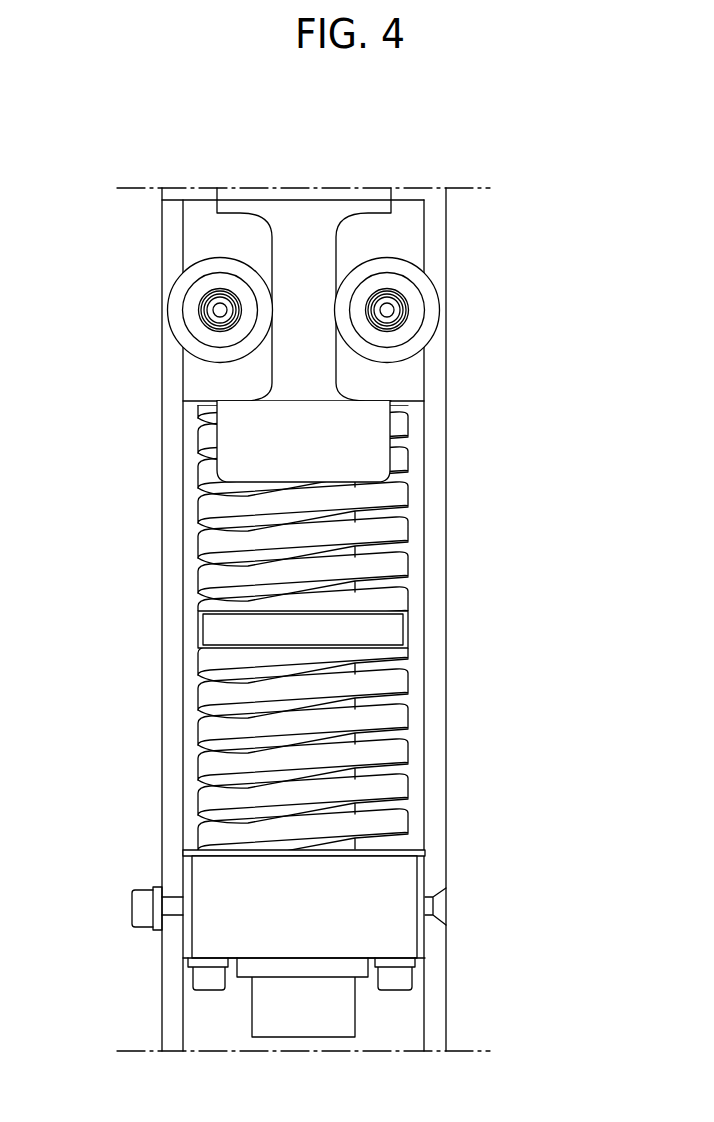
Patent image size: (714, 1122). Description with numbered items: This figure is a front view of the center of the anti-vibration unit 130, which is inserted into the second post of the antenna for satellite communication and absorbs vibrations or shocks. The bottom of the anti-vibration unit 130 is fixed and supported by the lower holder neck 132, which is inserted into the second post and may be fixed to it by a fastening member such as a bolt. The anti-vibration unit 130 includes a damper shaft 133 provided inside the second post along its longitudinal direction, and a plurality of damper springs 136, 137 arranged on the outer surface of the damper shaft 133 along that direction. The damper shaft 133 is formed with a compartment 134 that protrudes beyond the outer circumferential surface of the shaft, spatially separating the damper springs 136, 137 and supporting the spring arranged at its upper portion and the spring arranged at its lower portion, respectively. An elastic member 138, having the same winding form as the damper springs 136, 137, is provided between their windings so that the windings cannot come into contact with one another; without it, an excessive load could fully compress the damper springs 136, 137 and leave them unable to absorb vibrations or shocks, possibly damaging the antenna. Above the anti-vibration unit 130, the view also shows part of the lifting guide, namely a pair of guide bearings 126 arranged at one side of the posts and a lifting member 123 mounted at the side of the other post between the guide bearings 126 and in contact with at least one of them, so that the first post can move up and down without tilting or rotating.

The lifting member 123 is at (285, 385).
The guide bearing 126 is at (193, 272).
The anti-vibration unit 130 is at (580, 471).
The lower holder neck 132 is at (398, 882).
The damper shaft 133 is at (405, 521).
The compartment 134 is at (408, 630).
The damper spring 136 is at (403, 458).
The damper spring 137 is at (408, 747).
The elastic member 138 is at (408, 549).